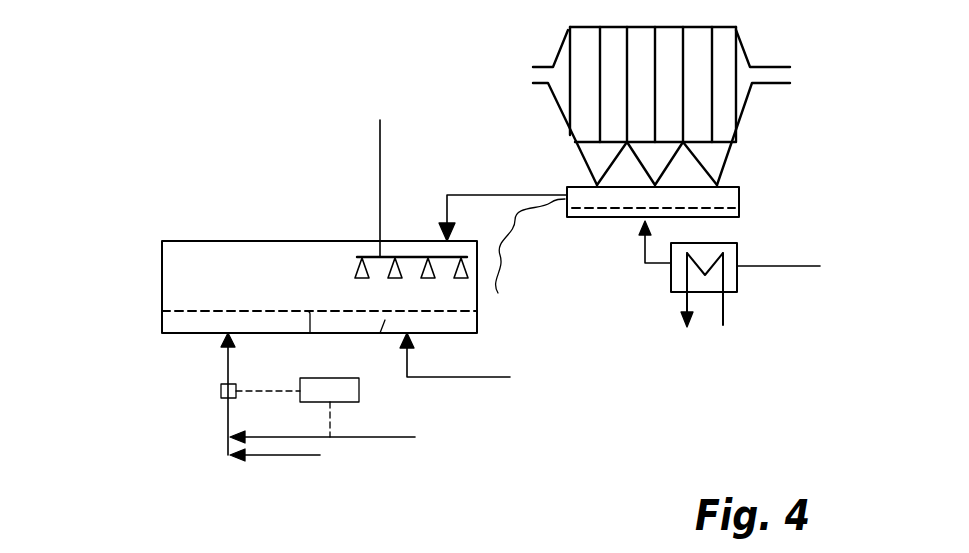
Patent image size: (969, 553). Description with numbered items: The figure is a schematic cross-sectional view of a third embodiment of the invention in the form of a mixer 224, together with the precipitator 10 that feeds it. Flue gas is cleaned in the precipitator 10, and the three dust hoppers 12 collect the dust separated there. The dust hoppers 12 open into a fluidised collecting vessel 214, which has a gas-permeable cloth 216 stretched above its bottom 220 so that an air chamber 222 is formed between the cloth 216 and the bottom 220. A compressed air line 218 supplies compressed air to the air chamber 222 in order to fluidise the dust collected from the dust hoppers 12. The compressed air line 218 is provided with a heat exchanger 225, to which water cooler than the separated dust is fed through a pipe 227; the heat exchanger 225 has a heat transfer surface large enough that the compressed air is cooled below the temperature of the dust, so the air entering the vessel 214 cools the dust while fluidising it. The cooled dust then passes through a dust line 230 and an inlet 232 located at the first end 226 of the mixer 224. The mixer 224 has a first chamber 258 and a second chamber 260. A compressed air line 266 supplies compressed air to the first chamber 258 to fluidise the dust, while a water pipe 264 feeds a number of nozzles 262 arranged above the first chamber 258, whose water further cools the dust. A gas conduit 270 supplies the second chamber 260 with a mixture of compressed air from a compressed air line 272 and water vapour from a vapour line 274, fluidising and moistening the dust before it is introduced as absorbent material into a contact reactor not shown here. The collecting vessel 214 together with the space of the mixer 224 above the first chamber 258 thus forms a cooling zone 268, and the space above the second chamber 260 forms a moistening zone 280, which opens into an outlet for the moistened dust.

The precipitator 10 is at (585, 53).
The dust hoppers 12 is at (598, 160).
The fluidised collecting vessel 214 is at (739, 195).
The gas-permeable cloth 216 is at (713, 209).
The compressed air line 218 is at (802, 268).
The bottom 220 is at (613, 218).
The air chamber 222 is at (577, 217).
The mixer 224 is at (242, 177).
The heat exchanger 225 is at (671, 275).
The first end 226 is at (478, 323).
The pipe 227 is at (724, 303).
The dust line 230 is at (489, 192).
The inlet 232 is at (428, 232).
The first chamber 258 is at (384, 320).
The second chamber 260 is at (202, 325).
The nozzles 262 is at (356, 277).
The water pipe 264 is at (380, 149).
The compressed air line 266 is at (500, 380).
The cooling zone 268 is at (430, 287).
The gas conduit 270 is at (227, 363).
The compressed air line 272 is at (280, 455).
The vapour line 274 is at (397, 437).
The moistening zone 280 is at (196, 278).